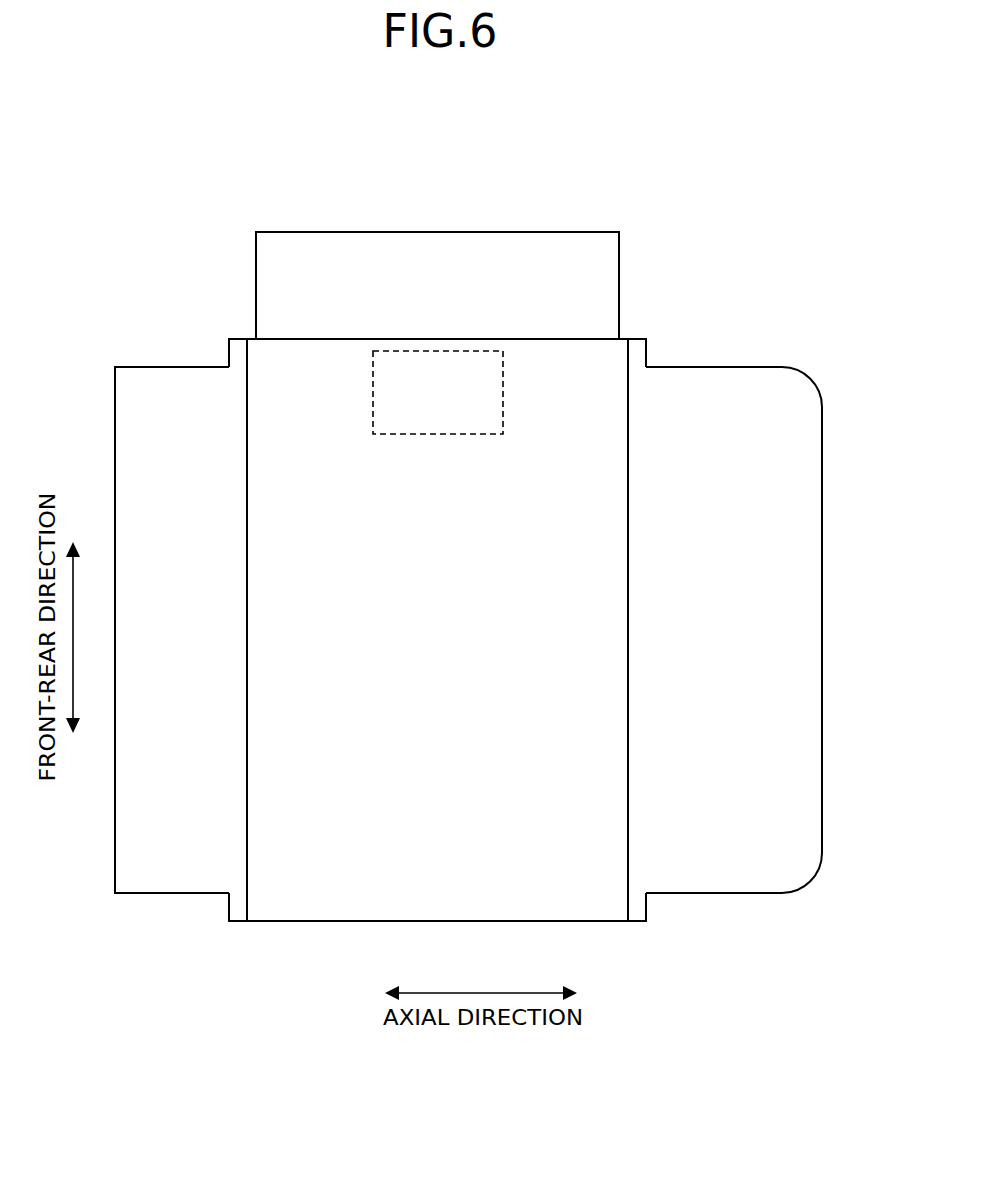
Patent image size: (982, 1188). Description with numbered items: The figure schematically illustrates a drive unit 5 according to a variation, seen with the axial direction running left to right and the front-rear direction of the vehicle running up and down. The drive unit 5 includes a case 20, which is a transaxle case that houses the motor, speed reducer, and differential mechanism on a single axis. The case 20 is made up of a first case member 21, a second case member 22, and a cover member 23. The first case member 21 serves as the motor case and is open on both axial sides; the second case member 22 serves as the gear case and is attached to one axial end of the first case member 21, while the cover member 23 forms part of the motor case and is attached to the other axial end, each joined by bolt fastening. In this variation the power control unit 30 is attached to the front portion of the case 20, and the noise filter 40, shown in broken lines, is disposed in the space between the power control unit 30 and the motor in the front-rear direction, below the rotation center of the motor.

The drive unit 5 is at (491, 158).
The case 20 is at (788, 358).
The first case member 21 is at (577, 339).
The second case member 22 is at (718, 367).
The cover member 23 is at (165, 367).
The power control unit 30 is at (349, 232).
The noise filter 40 is at (503, 375).